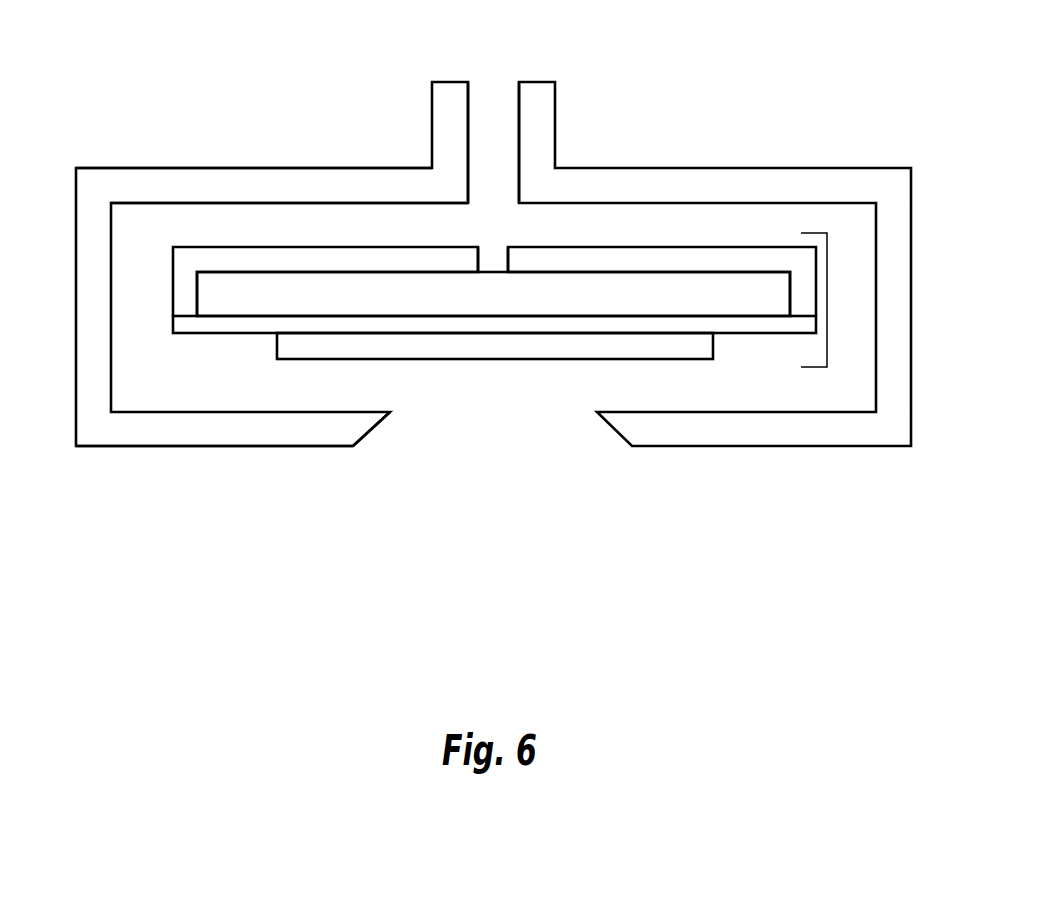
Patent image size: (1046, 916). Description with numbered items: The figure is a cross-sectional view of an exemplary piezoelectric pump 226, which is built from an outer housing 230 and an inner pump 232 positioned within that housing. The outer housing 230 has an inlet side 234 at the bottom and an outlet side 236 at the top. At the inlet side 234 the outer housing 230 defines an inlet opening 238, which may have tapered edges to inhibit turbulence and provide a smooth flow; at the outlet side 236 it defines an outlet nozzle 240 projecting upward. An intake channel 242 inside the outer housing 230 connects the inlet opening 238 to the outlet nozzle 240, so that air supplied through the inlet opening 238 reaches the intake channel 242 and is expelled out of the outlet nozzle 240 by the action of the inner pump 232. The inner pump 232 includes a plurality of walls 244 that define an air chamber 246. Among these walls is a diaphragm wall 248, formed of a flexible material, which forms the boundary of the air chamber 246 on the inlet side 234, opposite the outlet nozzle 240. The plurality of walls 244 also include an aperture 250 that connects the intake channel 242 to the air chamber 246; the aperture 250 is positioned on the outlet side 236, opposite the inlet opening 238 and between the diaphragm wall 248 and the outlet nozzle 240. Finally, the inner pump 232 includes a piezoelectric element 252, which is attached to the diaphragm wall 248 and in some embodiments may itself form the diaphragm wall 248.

The piezoelectric pump 226 is at (165, 56).
The outer housing 230 is at (911, 437).
The inner pump 232 is at (828, 287).
The inlet side 234 is at (198, 471).
The outlet side 236 is at (237, 148).
The inlet opening 238 is at (355, 446).
The outlet nozzle 240 is at (510, 87).
The intake channel 242 is at (370, 218).
The plurality of walls 244 is at (172, 327).
The air chamber 246 is at (750, 300).
The diaphragm wall 248 is at (266, 335).
The aperture 250 is at (500, 247).
The piezoelectric element 252 is at (596, 362).